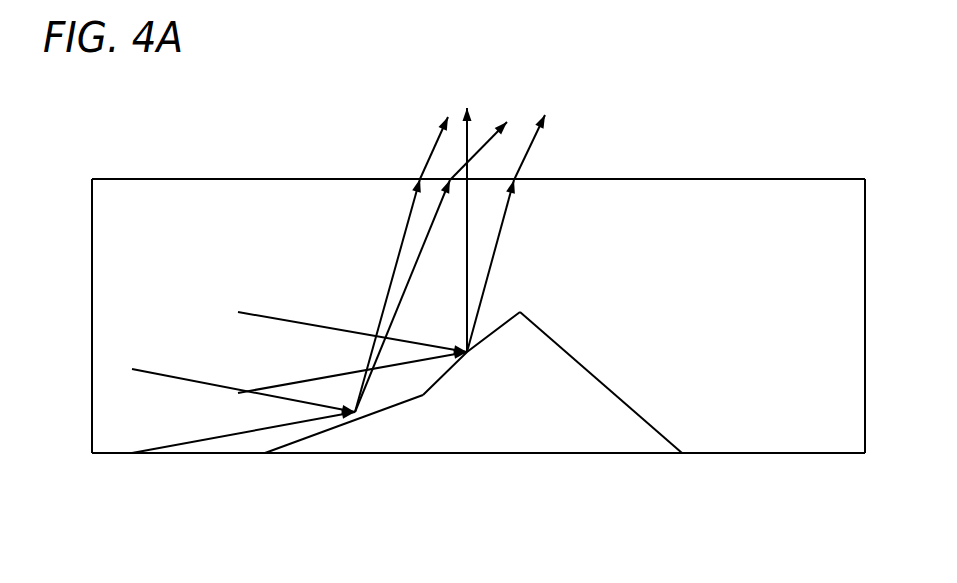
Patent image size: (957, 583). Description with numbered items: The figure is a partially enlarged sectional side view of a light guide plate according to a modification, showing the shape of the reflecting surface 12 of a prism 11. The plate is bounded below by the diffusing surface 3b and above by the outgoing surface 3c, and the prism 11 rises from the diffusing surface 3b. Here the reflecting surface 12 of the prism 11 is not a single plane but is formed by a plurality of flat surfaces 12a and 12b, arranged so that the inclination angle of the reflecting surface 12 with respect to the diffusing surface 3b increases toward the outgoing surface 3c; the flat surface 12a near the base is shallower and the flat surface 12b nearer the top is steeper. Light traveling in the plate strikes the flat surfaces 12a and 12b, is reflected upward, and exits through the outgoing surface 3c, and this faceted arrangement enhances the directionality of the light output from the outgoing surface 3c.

The outgoing surface 3c is at (768, 179).
The diffusing surface 3b is at (813, 455).
The prism 11 is at (682, 470).
The reflecting surface 12 is at (473, 382).
The flat surface 12a is at (400, 397).
The flat surface 12b is at (480, 343).